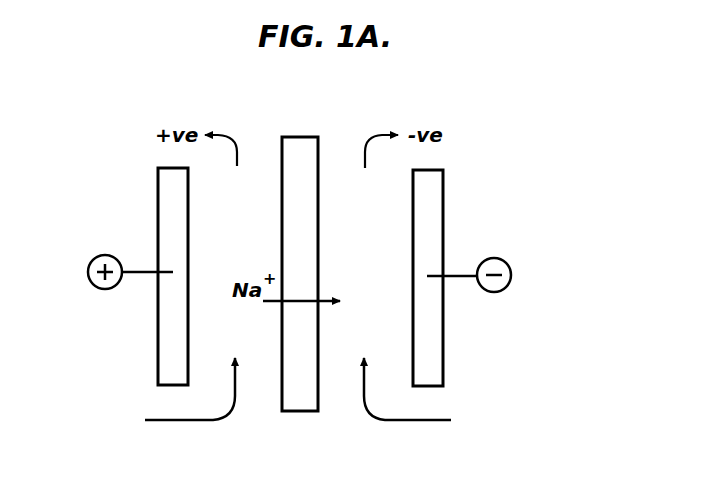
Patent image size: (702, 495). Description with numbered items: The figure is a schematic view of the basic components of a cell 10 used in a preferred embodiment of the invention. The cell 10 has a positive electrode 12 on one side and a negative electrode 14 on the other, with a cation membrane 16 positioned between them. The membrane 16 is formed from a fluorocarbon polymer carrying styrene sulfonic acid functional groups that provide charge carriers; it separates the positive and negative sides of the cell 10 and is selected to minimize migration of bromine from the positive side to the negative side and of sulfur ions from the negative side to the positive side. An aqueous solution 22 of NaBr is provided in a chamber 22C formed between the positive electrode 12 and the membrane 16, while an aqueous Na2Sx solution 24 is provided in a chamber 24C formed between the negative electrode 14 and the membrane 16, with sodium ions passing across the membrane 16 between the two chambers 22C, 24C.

The cell 10 is at (232, 101).
The positive electrode 12 is at (164, 184).
The negative electrode 14 is at (430, 180).
The cation membrane 16 is at (302, 143).
The aqueous solution of NaBr 22 is at (85, 408).
The chamber 22C is at (234, 248).
The aqueous Na2Sx solution 24 is at (503, 396).
The chamber 24C is at (362, 248).